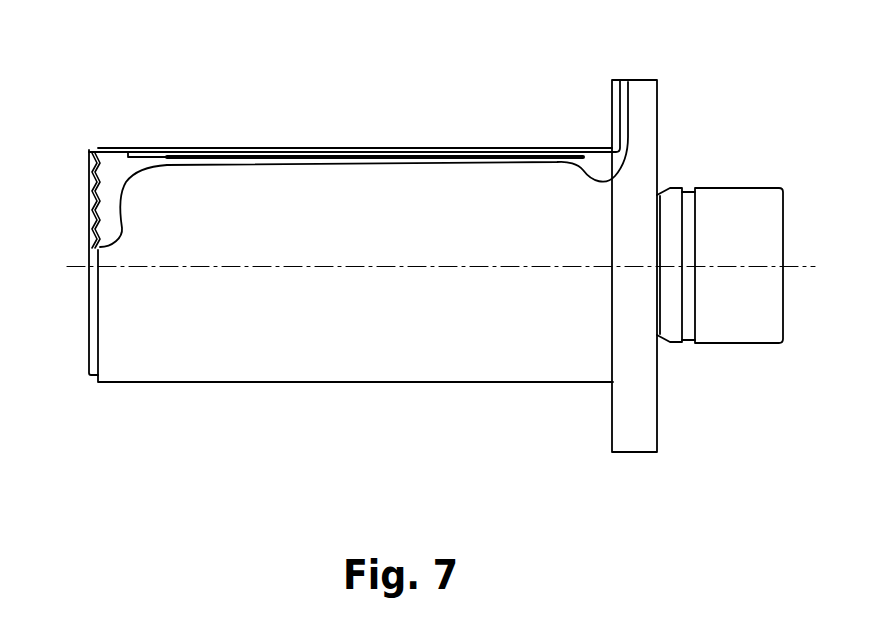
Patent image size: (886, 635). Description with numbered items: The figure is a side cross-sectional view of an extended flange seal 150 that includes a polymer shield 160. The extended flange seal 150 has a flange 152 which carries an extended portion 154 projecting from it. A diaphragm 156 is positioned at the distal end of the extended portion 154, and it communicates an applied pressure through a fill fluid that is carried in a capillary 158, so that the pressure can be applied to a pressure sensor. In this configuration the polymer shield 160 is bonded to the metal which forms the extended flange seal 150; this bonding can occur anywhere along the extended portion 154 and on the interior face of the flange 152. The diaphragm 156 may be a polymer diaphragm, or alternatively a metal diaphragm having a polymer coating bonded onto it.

The extended flange seal 150 is at (770, 143).
The flange 152 is at (658, 110).
The extended portion 154 is at (300, 383).
The diaphragm 156 is at (88, 205).
The capillary 158 is at (293, 240).
The polymer shield 160 is at (608, 104).